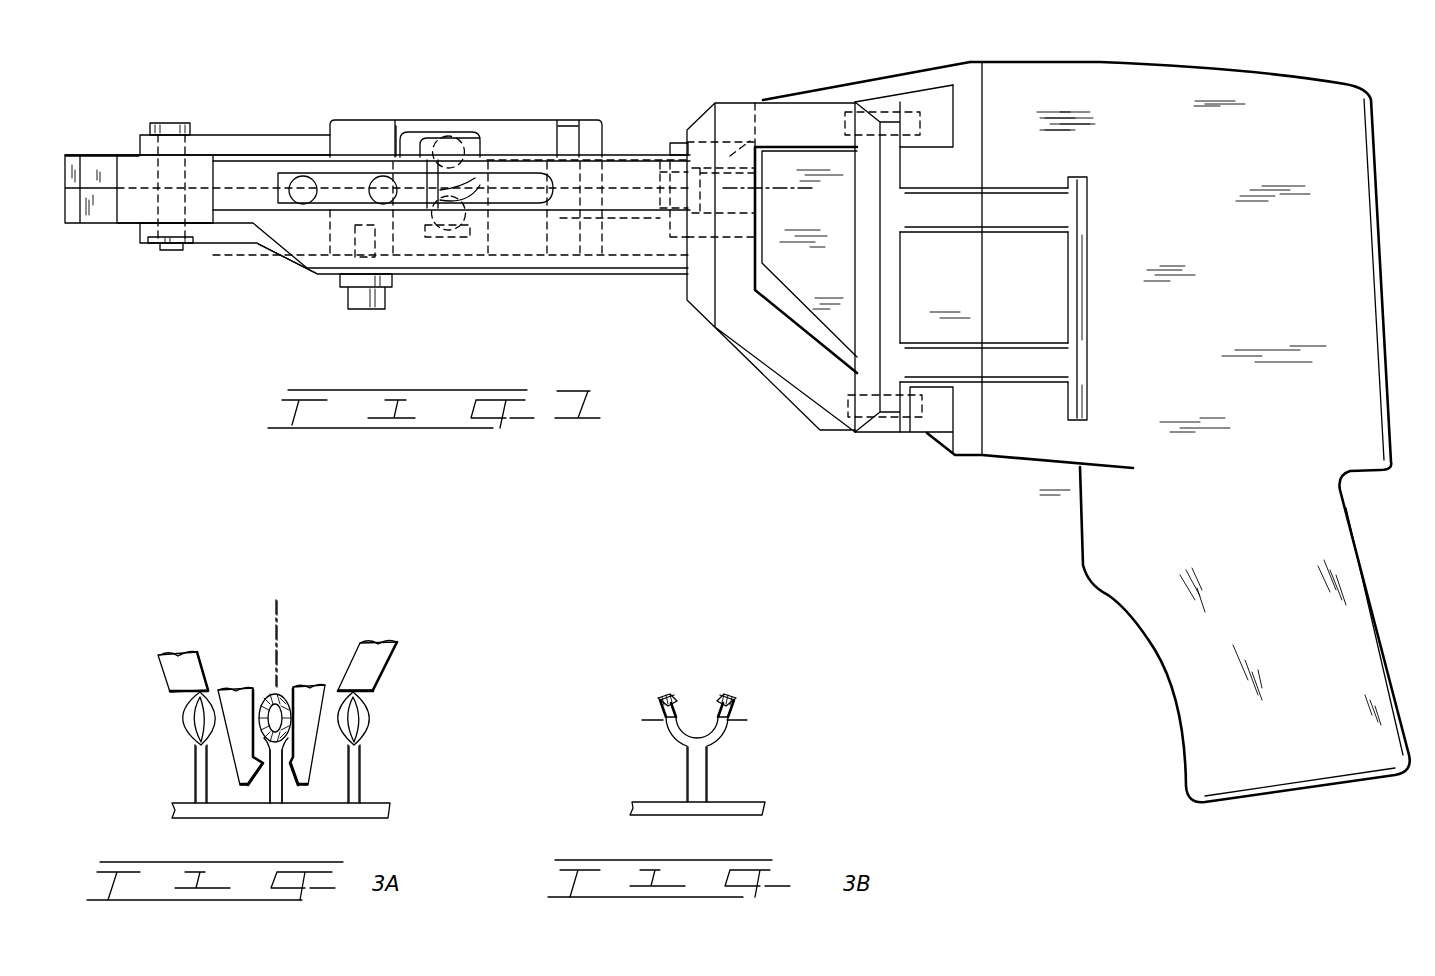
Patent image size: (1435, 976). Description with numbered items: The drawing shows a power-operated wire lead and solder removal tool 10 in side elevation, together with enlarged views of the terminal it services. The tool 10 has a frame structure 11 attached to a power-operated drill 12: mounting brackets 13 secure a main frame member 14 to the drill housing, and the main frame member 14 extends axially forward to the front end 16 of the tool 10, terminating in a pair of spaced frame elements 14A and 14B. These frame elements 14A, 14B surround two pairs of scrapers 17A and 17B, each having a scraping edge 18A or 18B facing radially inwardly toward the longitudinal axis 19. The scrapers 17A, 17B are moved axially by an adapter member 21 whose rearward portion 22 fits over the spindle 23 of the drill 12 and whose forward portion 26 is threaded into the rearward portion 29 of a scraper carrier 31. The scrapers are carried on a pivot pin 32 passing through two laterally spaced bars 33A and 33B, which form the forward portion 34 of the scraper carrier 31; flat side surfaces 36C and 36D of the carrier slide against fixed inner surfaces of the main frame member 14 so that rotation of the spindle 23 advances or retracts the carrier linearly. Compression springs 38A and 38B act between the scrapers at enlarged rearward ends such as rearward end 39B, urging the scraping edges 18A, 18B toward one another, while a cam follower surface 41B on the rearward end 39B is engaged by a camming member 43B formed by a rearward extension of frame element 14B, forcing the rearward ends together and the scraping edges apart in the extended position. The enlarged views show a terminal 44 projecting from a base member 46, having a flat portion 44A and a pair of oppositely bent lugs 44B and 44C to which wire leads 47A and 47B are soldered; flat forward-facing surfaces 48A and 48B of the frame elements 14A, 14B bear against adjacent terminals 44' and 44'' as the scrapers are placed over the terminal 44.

In FIG. 1, the wire lead and solder removal tool 10 is at (550, 348).
In FIG. 1, the frame structure 11 is at (738, 67).
In FIG. 1, the power-operated drill 12 is at (1353, 236).
In FIG. 1, the mounting brackets 13 is at (997, 202).
In FIG. 1, the main frame member 14 is at (740, 113).
In FIG. 3A, the frame element 14A is at (173, 657).
In FIG. 1, the frame element 14B is at (203, 170).
In FIG. 3A, the frame element 14B is at (380, 643).
In FIG. 1, the front end 16 is at (180, 85).
In FIG. 3A, the front end 16 is at (444, 667).
In FIG. 3A, the scraper 17A is at (222, 690).
In FIG. 1, the scraper 17B is at (68, 180).
In FIG. 3A, the scraper 17B is at (317, 687).
In FIG. 3A, the scraping edge 18A is at (235, 775).
In FIG. 3A, the scraping edge 18B is at (325, 775).
In FIG. 1, the longitudinal axis 19 is at (807, 190).
In FIG. 3A, the longitudinal axis 19 is at (275, 623).
In FIG. 1, the adapter member 21 is at (680, 143).
In FIG. 1, the rearward portion 22 is at (762, 130).
In FIG. 1, the spindle 23 is at (743, 198).
In FIG. 1, the forward portion 26 is at (618, 157).
In FIG. 1, the rearward portion 29 is at (558, 117).
In FIG. 1, the scraper carrier 31 is at (402, 130).
In FIG. 1, the pivot pin 32 is at (172, 250).
In FIG. 1, the bar 33A is at (290, 137).
In FIG. 1, the bar 33B is at (247, 243).
In FIG. 1, the forward portion 34 is at (202, 140).
In FIG. 1, the flat side surface 36C is at (360, 133).
In FIG. 1, the flat side surface 36D is at (570, 135).
In FIG. 1, the compression spring 38A is at (465, 135).
In FIG. 1, the compression spring 38B is at (468, 230).
In FIG. 1, the rearward end 39B is at (465, 148).
In FIG. 1, the cam follower surface 41B is at (470, 177).
In FIG. 1, the camming member 43B is at (408, 173).
In FIG. 3A, the terminal 44 is at (259, 771).
In FIG. 3B, the terminal 44 is at (712, 751).
In FIG. 3A, the adjacent terminal 44' is at (166, 774).
In FIG. 3A, the adjacent terminal 44'' is at (380, 774).
In FIG. 3A, the flat portion 44A is at (275, 778).
In FIG. 3B, the flat portion 44A is at (690, 767).
In FIG. 3A, the lug 44B is at (270, 697).
In FIG. 3B, the lug 44B is at (682, 693).
In FIG. 3A, the lug 44C is at (278, 697).
In FIG. 3B, the lug 44C is at (706, 694).
In FIG. 3A, the base member 46 is at (390, 803).
In FIG. 3B, the base member 46 is at (760, 802).
In FIG. 3A, the wire lead 47A is at (185, 735).
In FIG. 3B, the wire lead 47A is at (663, 708).
In FIG. 3A, the wire lead 47B is at (368, 733).
In FIG. 3B, the wire lead 47B is at (722, 710).
In FIG. 3A, the forward-facing surface 48A is at (173, 692).
In FIG. 1, the forward-facing surface 48B is at (117, 160).
In FIG. 3A, the forward-facing surface 48B is at (373, 690).